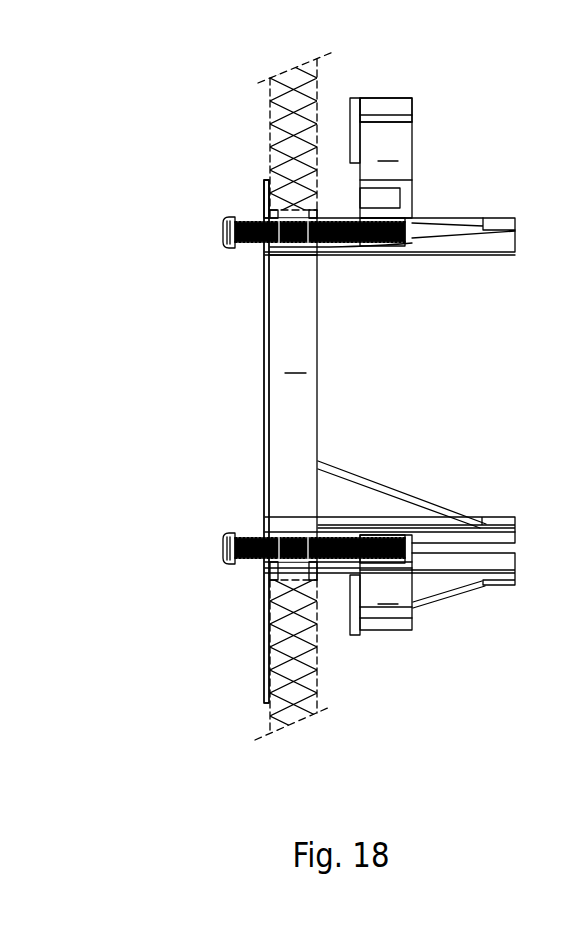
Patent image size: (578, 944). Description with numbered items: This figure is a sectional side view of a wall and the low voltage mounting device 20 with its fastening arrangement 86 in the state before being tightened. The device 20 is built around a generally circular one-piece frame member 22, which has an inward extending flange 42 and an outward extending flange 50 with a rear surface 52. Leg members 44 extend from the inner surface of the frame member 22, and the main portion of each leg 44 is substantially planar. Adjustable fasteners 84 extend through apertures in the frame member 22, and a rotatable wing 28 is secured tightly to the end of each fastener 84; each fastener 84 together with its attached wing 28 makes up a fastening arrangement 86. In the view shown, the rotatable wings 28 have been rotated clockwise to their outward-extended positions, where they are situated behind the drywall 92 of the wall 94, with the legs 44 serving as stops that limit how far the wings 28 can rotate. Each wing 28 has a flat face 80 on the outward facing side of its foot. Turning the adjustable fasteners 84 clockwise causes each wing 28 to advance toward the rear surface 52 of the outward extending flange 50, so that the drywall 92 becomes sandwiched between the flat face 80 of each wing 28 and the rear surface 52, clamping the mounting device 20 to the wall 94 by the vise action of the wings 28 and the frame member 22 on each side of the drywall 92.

The low voltage mounting device 20 is at (148, 174).
The frame member 22 is at (266, 322).
The rotatable wing 28 is at (381, 366).
The inward extending flange 42 is at (293, 395).
The leg member 44 is at (437, 250).
The outward extending flange 50 is at (268, 180).
The rear surface 52 is at (395, 115).
The flat face 80 is at (322, 117).
The adjustable fastener 84 is at (222, 230).
The fastening arrangement 86 is at (203, 264).
The drywall 92 is at (300, 679).
The wall 94 is at (270, 143).